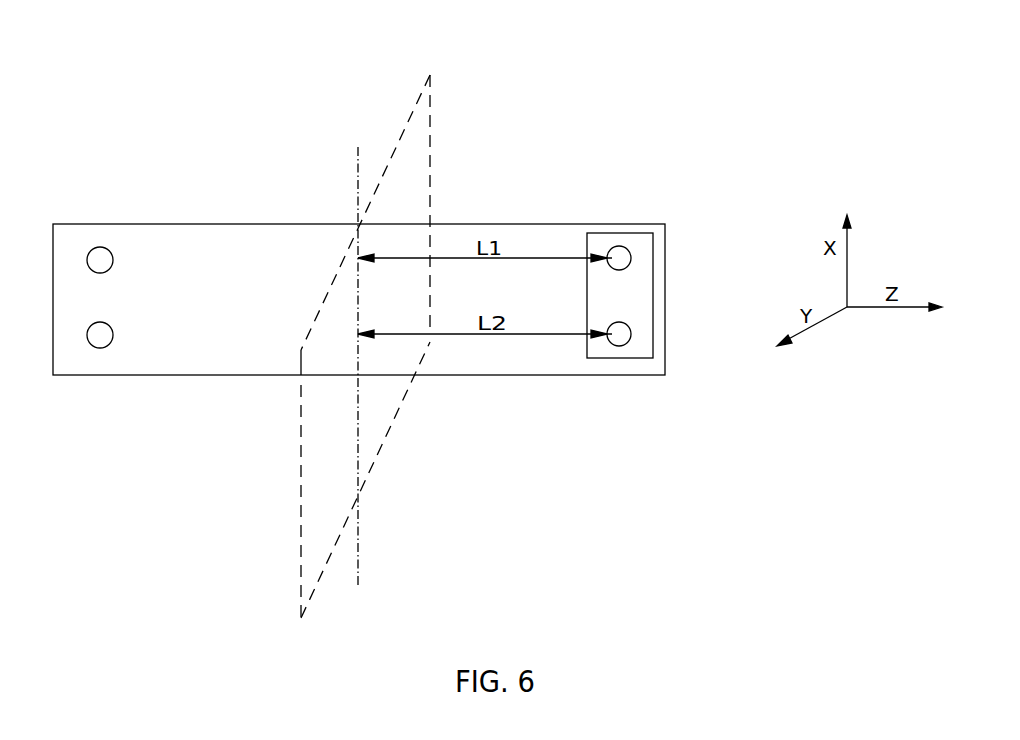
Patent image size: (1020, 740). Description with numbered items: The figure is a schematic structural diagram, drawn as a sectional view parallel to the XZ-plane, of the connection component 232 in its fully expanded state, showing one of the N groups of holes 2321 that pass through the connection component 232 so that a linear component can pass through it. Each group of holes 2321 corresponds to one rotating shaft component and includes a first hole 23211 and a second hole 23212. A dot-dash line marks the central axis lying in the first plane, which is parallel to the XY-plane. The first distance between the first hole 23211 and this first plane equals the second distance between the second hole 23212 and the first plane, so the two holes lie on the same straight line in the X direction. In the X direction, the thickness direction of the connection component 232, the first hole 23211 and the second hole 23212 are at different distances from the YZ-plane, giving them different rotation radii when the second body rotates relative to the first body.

The connection component 232 is at (462, 83).
The group of holes 2321 is at (618, 233).
The first hole 23211 is at (631, 258).
The second hole 23212 is at (631, 334).